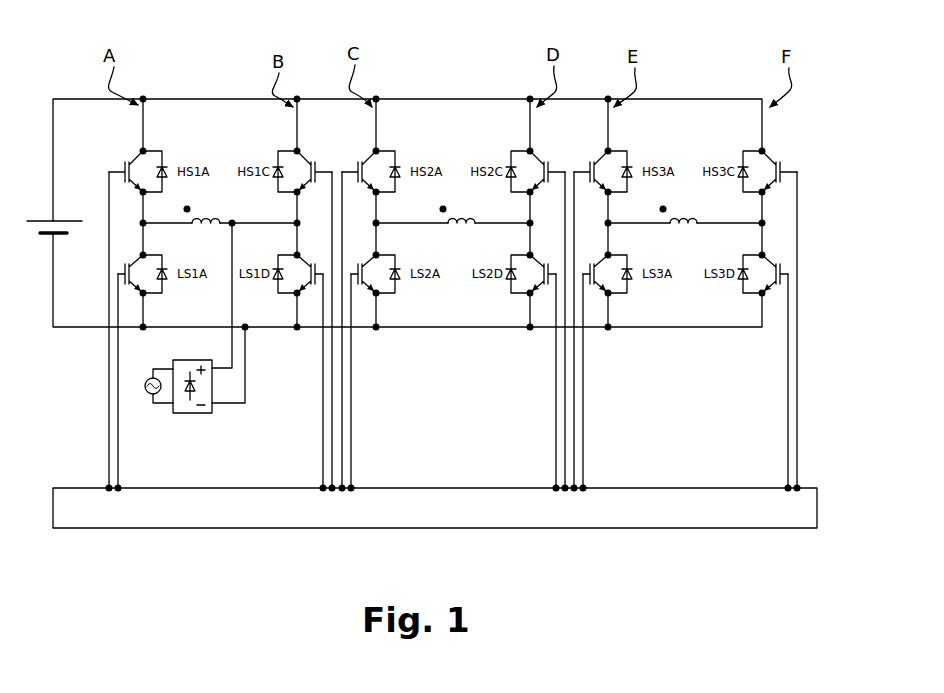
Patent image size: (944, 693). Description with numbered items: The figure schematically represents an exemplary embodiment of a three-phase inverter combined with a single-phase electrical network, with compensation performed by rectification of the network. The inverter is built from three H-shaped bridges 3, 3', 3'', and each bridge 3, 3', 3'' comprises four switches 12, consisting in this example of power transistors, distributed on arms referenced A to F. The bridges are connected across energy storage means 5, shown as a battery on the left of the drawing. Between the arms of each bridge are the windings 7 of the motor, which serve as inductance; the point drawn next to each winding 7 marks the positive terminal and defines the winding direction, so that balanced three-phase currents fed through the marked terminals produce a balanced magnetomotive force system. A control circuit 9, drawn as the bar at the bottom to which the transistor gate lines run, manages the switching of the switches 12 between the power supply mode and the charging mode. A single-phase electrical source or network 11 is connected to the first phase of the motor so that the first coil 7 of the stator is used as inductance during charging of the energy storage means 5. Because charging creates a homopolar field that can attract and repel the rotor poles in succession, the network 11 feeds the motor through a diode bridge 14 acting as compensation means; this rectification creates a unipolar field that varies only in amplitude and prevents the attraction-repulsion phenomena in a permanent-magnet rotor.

The H-shaped bridge 3 is at (220, 62).
The H-shaped bridge 3' is at (453, 62).
The H-shaped bridge 3'' is at (685, 102).
The energy storage means 5 is at (40, 220).
The windings 7 is at (457, 208).
The control circuit 9 is at (455, 499).
The single-phase electrical source or network 11 is at (145, 400).
The switches 12 is at (431, 217).
The diode bridge 14 is at (196, 413).